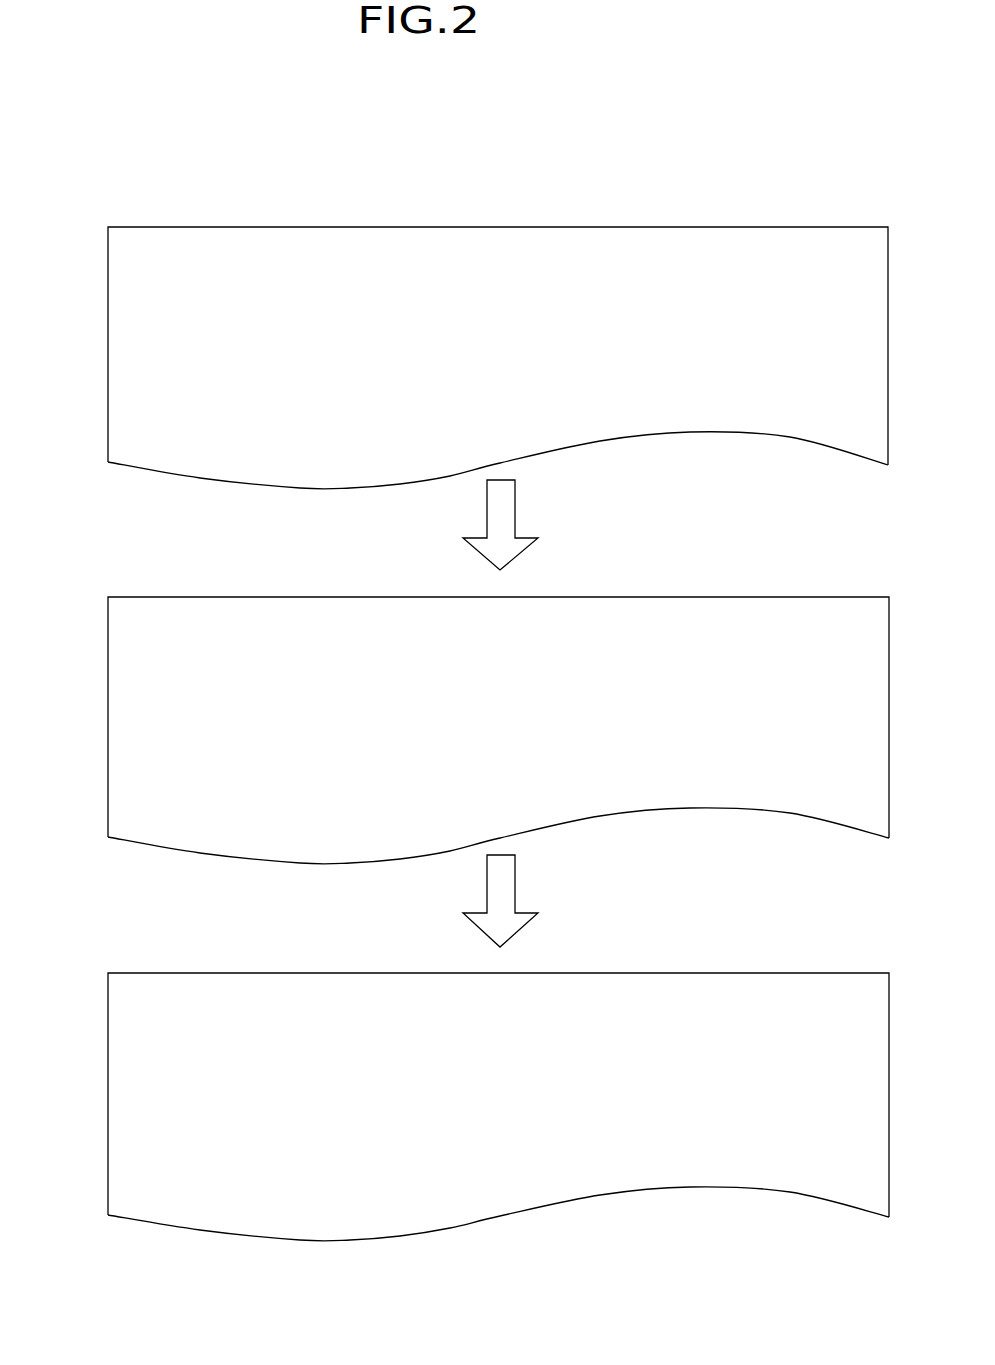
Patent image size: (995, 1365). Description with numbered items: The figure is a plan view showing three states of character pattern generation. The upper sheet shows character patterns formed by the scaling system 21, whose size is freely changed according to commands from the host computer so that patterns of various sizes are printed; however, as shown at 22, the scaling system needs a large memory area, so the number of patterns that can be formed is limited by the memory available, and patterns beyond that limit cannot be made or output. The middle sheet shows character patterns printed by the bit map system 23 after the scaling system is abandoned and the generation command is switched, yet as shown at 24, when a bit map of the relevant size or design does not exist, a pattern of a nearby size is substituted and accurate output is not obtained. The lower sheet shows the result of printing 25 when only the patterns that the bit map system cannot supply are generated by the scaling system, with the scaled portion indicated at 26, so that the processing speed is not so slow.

The character patterns formed by the scaling system 21 is at (108, 386).
The scaling system output limited by memory 22 is at (507, 382).
The character patterns printed by the bit map system 23 is at (108, 760).
The substituted bit map character pattern 24 is at (662, 755).
The result of mixed printing 25 is at (108, 1146).
The scaled characters in mixed output 26 is at (508, 1133).